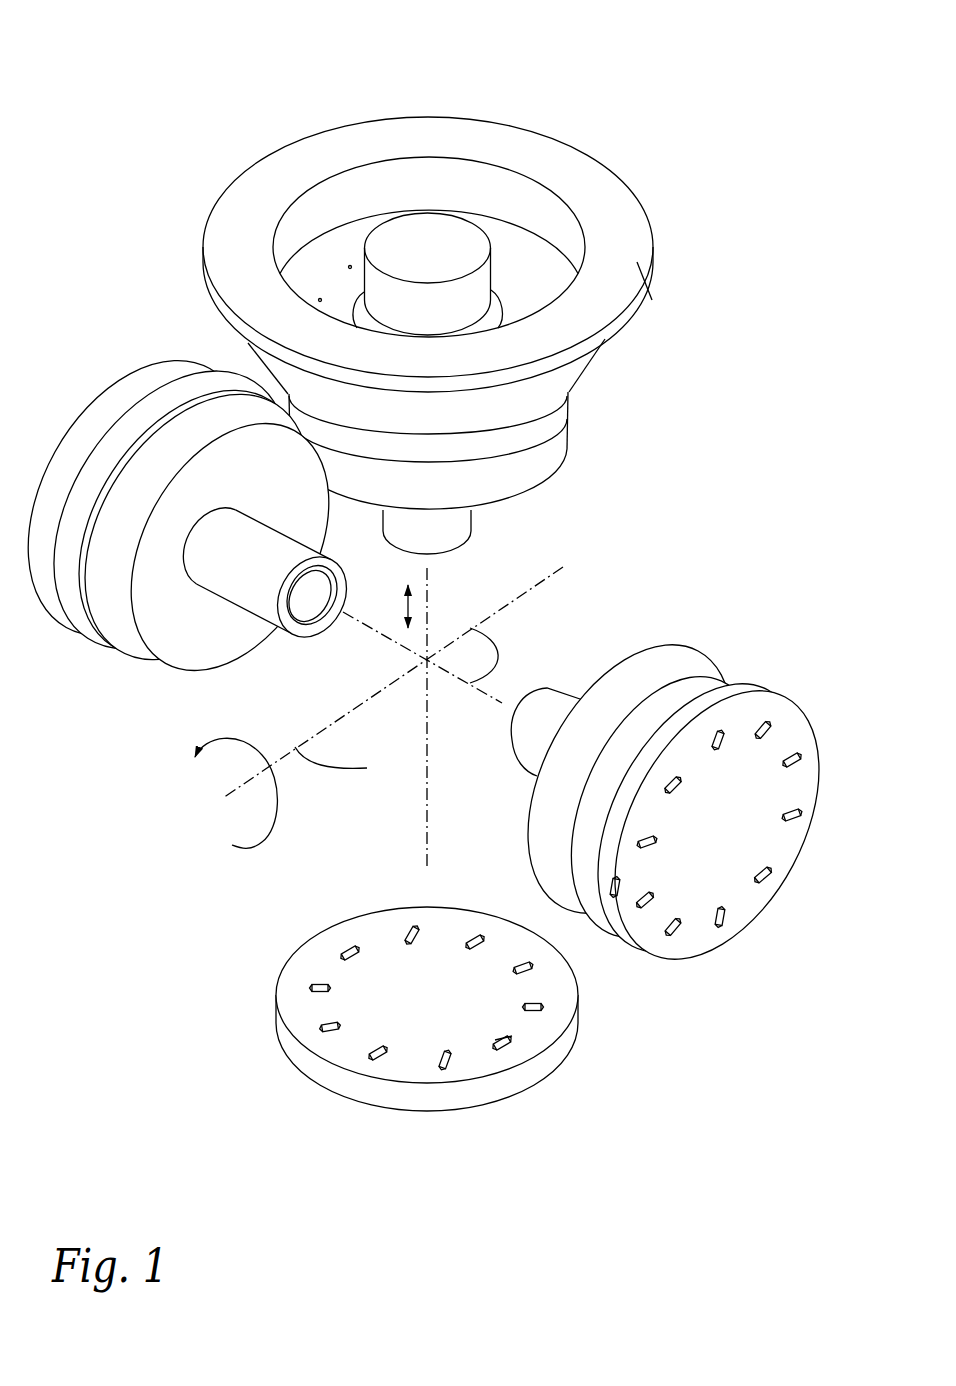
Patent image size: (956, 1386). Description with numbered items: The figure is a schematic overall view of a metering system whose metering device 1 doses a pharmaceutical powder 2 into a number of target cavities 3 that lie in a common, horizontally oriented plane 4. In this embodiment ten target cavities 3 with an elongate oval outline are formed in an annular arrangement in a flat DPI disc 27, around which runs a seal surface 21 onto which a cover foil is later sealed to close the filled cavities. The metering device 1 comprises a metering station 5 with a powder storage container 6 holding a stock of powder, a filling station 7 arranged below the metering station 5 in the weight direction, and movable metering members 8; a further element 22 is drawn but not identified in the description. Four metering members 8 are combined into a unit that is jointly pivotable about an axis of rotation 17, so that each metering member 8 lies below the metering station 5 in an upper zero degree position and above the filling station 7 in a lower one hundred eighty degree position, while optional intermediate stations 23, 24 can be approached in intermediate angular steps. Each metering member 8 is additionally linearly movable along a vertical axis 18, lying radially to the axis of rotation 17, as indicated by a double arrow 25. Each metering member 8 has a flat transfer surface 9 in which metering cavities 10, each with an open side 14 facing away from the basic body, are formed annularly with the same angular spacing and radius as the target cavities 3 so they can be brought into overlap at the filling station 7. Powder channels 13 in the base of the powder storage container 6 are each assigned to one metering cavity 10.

The metering device 1 is at (506, 277).
The powder 2 is at (331, 220).
The target cavities 3 is at (505, 1040).
The common plane 4 is at (388, 970).
The metering station 5 is at (693, 265).
The powder storage container 6 is at (362, 195).
The filling station 7 is at (370, 1018).
The metering member 8 is at (643, 680).
The transfer surface 9 is at (717, 845).
The metering cavities 10 is at (720, 923).
The powder channels 13 is at (524, 282).
The open side 14 is at (723, 933).
The axis of rotation 17 is at (393, 682).
The vertical axis 18 is at (498, 652).
The seal surface 21 is at (503, 1043).
The rotation direction 22 is at (252, 743).
The intermediate station 23 is at (82, 388).
The intermediate station 24 is at (673, 824).
The double arrow 25 is at (395, 598).
The DPI disc 27 is at (425, 1112).